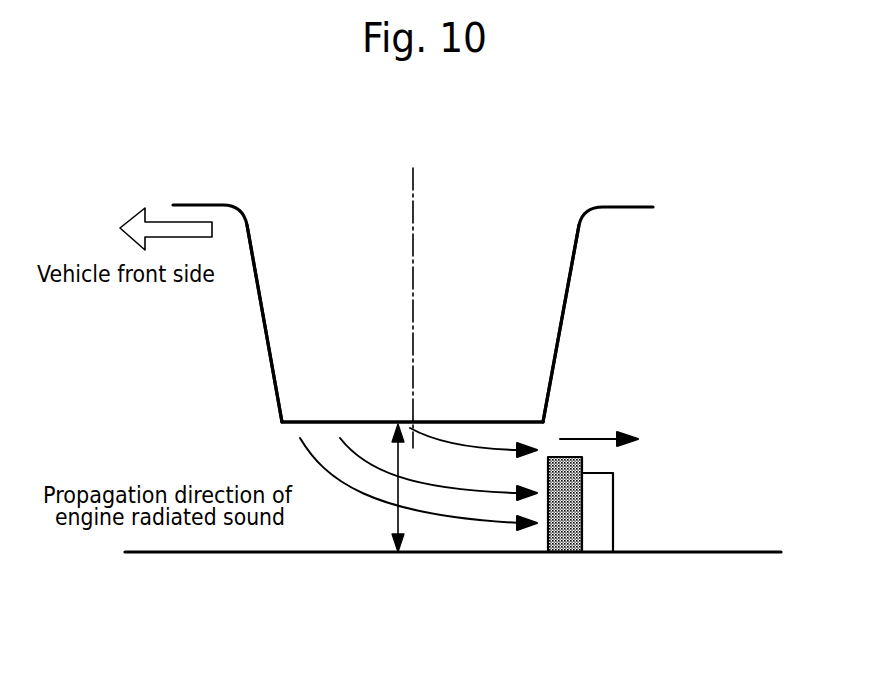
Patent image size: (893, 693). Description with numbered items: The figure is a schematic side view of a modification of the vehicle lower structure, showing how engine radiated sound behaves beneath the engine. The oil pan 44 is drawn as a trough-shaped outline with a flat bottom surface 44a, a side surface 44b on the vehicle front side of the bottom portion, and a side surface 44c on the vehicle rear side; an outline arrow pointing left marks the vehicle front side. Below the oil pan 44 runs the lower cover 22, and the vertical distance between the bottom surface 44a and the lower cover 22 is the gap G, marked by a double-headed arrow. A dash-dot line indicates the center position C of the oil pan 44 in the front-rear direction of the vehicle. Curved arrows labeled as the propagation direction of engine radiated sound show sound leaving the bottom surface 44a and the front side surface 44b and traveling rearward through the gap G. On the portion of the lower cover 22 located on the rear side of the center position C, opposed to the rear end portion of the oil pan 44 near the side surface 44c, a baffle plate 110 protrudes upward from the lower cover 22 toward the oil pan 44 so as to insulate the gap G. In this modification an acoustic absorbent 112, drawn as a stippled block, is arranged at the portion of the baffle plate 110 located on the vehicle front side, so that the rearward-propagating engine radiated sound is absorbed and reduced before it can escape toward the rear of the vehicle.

The oil pan 44 is at (527, 173).
The bottom surface of the oil pan 44a is at (346, 424).
The side surface of the oil pan on the vehicle front side 44b is at (258, 321).
The side surface of the oil pan on the vehicle rear side 44c is at (568, 318).
The center position of the oil pan C is at (414, 420).
The gap G is at (415, 520).
The lower cover 22 is at (700, 550).
The baffle plate 110 is at (598, 555).
The acoustic absorbent 112 is at (553, 555).